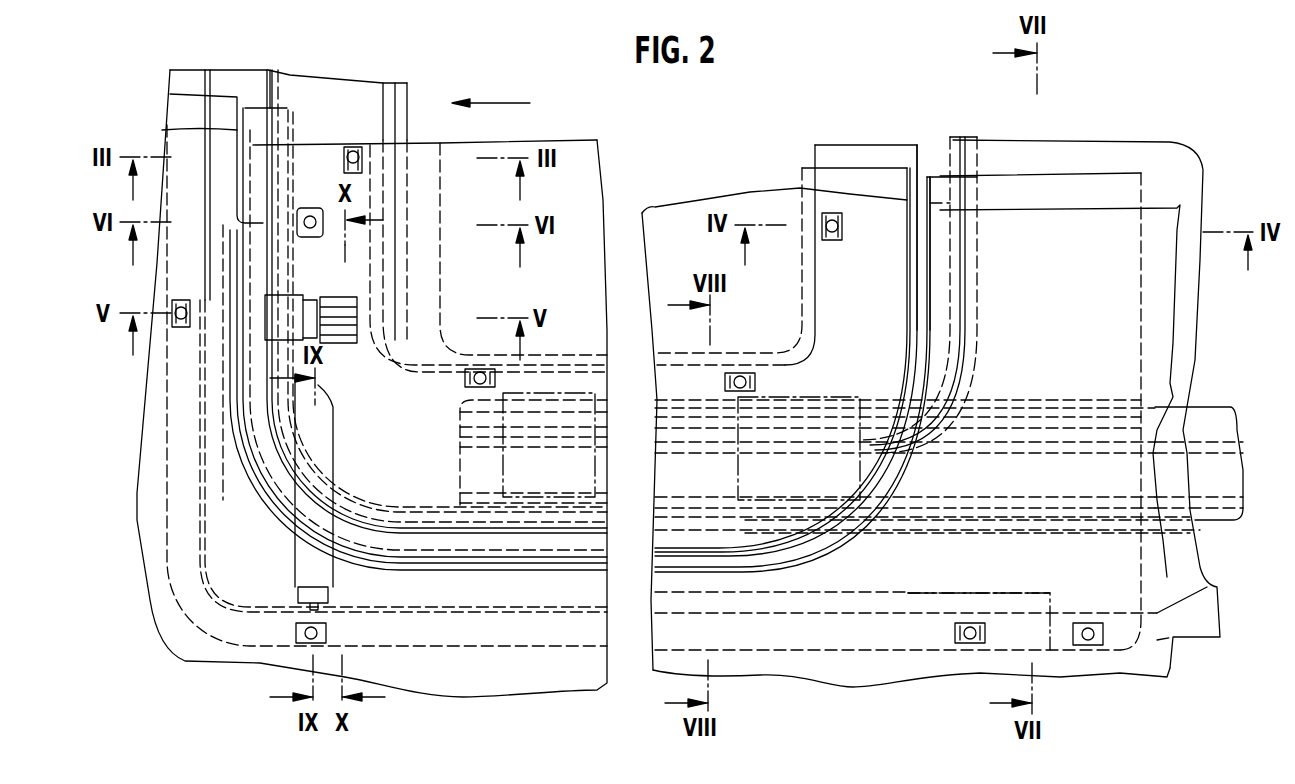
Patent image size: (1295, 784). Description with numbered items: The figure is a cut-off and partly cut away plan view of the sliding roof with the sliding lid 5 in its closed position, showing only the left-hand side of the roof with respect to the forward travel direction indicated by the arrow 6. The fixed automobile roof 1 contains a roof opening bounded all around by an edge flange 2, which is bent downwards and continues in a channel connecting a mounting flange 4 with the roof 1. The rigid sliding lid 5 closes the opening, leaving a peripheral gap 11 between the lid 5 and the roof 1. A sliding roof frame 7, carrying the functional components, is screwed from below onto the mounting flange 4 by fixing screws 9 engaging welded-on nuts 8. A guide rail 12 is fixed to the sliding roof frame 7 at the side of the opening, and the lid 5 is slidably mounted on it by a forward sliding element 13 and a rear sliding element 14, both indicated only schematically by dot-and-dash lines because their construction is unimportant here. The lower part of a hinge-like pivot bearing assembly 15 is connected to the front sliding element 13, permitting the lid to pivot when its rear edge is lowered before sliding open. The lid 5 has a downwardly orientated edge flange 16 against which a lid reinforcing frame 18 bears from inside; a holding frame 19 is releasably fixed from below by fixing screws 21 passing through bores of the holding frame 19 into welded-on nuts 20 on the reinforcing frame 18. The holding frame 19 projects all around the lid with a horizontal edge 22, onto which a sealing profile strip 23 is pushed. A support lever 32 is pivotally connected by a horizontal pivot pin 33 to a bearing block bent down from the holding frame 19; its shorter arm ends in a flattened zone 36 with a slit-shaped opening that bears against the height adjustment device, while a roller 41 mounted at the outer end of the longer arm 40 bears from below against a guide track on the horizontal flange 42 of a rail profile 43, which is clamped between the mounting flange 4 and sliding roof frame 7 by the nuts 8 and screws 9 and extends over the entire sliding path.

The fixed automobile roof 1 is at (147, 577).
The edge flange 2 is at (925, 272).
The mounting flange 4 is at (218, 100).
The sliding lid 5 is at (642, 213).
The arrow 6 is at (505, 100).
The sliding roof frame 7 is at (383, 85).
The welded-on nut 8 is at (185, 300).
The fixing screw 9 is at (185, 330).
The gap 11 is at (923, 305).
The guide rail 12 is at (460, 468).
The forward sliding element 13 is at (563, 393).
The rear sliding element 14 is at (838, 397).
The pivot bearing assembly 15 is at (337, 295).
The edge flange 16 is at (907, 242).
The lid reinforcing frame 18 is at (440, 143).
The holding frame 19 is at (310, 110).
The welded-on nut 20 is at (345, 163).
The fixing screw 21 is at (353, 150).
The edge 22 is at (247, 197).
The sealing profile strip 23 is at (263, 350).
The support lever 32 is at (333, 415).
The pivot pin 33 is at (303, 317).
The flattened zone 36 is at (333, 252).
The arm 40 is at (317, 223).
The roller 41 is at (328, 593).
The flange 42 is at (1000, 607).
The rail profile 43 is at (908, 593).